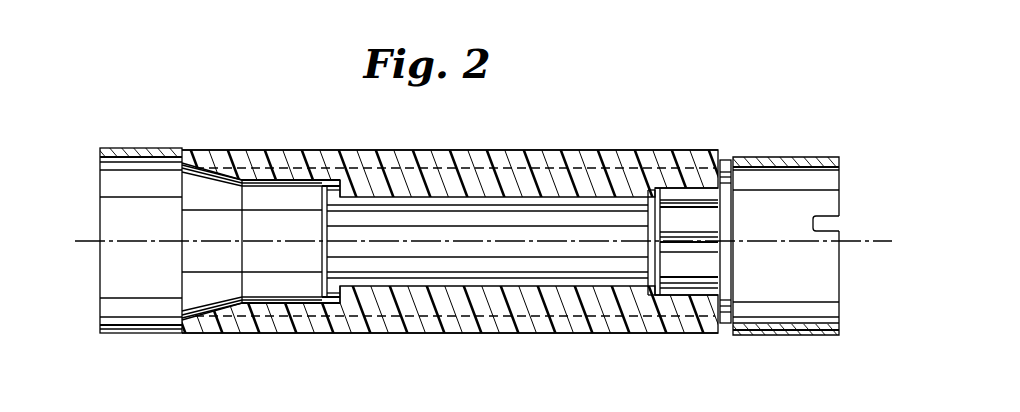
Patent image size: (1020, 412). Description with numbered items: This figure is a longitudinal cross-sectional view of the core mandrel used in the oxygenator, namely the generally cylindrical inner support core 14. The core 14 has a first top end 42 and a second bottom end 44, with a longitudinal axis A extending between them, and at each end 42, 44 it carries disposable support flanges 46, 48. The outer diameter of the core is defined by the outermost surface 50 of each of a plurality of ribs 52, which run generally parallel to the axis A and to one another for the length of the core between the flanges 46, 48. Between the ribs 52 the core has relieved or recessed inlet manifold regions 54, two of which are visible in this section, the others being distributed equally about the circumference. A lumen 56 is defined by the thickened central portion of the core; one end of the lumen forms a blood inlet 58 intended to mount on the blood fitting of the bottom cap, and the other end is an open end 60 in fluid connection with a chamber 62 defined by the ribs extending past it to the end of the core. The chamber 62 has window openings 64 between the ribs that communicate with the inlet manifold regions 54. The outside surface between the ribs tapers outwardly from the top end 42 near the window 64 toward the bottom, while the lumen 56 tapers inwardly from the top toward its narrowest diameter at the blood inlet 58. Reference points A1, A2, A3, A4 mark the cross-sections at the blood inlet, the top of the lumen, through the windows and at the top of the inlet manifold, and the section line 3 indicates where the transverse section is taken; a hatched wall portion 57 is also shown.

The core 14 is at (505, 142).
The first top end 42 is at (783, 144).
The second bottom end 44 is at (148, 140).
The disposable support flange 46 is at (93, 157).
The disposable support flange 48 is at (840, 156).
The outermost surface 50 is at (345, 150).
The ribs 52 is at (402, 152).
The inlet manifold regions 54 is at (586, 165).
The lumen 56 is at (483, 226).
The seal insert 57 is at (687, 219).
The blood inlet 58 is at (317, 268).
The open end 60 is at (655, 248).
The chamber 62 is at (693, 266).
The window openings 64 is at (729, 160).
The longitudinal axis A is at (817, 243).
The reference point A1 is at (340, 290).
The reference point A2 is at (641, 203).
The reference point A3 is at (695, 274).
The reference point A4 is at (672, 203).
The section line 3- 3 is at (718, 148).